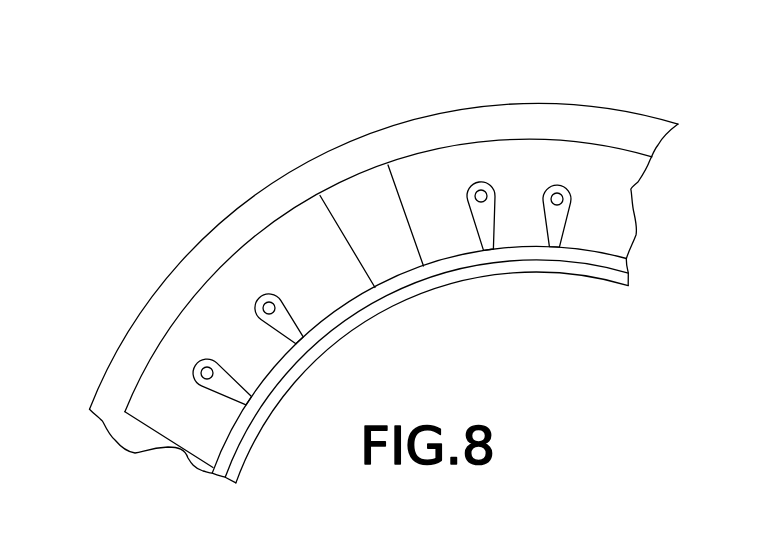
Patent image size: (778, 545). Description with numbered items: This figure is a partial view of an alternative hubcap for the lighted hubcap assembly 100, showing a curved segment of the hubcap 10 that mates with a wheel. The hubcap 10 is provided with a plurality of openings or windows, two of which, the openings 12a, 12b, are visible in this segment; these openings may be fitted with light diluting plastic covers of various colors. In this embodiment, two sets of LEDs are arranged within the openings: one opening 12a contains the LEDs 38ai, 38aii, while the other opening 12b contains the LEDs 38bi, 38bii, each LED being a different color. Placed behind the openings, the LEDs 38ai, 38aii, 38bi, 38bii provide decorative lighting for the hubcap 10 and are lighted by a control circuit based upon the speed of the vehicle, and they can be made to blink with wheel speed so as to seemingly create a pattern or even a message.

The lighted hubcap assembly 100 is at (331, 95).
The hubcap 10 is at (595, 122).
The opening 12a is at (428, 168).
The opening 12b is at (213, 300).
The LED 38ai is at (571, 196).
The LED 38aii is at (478, 182).
The LED 38bi is at (263, 293).
The LED 38bii is at (196, 366).